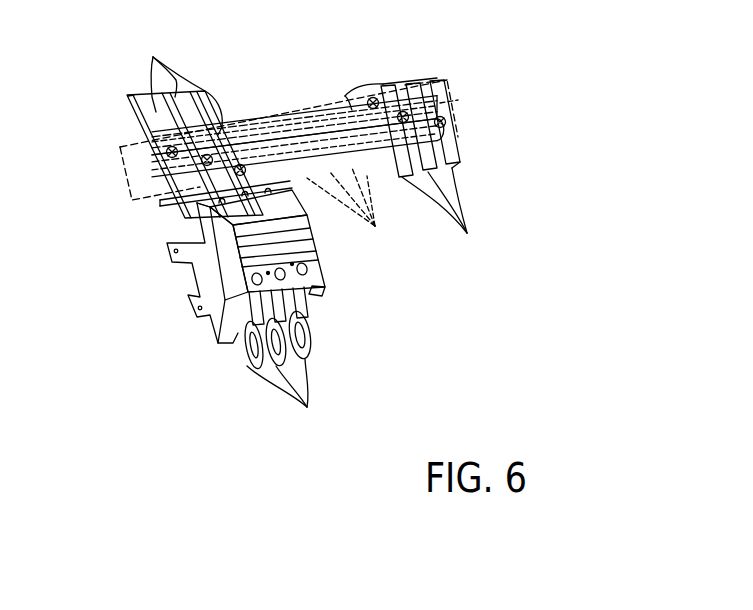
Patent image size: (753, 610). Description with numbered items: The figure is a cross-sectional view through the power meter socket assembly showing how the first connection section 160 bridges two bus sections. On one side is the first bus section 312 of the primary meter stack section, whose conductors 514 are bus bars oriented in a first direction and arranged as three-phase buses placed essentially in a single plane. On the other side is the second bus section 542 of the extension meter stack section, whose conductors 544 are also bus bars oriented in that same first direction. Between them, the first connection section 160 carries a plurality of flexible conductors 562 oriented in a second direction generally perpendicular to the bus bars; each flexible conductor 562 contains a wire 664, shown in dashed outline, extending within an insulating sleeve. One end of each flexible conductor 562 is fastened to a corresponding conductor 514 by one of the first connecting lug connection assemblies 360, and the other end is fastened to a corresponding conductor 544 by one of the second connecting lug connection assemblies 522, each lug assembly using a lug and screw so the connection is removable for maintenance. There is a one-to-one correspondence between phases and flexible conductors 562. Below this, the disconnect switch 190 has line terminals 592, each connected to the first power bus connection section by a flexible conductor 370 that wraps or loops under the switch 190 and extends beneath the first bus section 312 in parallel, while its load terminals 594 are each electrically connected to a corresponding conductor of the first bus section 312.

The conductors 514 is at (195, 120).
The first bus section 312 is at (134, 124).
The first connecting lug connection assemblies 360 is at (163, 162).
The first connection section 160 is at (273, 110).
The wire 664 is at (313, 107).
The load terminals 594 is at (197, 212).
The second connecting lug connection assemblies 522 is at (452, 127).
The conductors 544 is at (442, 220).
The second bus section 542 is at (494, 158).
The flexible conductors 562 is at (373, 226).
The disconnect switch 190 is at (228, 262).
The line terminals 592 is at (318, 285).
The flexible conductors 370 is at (282, 379).